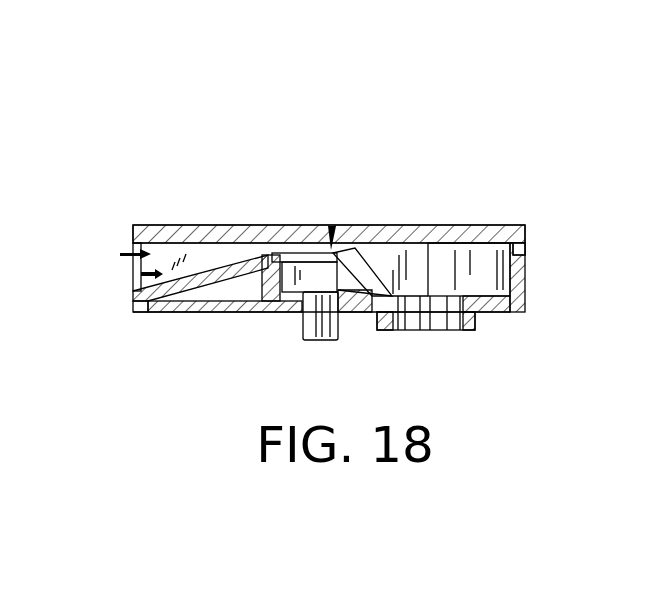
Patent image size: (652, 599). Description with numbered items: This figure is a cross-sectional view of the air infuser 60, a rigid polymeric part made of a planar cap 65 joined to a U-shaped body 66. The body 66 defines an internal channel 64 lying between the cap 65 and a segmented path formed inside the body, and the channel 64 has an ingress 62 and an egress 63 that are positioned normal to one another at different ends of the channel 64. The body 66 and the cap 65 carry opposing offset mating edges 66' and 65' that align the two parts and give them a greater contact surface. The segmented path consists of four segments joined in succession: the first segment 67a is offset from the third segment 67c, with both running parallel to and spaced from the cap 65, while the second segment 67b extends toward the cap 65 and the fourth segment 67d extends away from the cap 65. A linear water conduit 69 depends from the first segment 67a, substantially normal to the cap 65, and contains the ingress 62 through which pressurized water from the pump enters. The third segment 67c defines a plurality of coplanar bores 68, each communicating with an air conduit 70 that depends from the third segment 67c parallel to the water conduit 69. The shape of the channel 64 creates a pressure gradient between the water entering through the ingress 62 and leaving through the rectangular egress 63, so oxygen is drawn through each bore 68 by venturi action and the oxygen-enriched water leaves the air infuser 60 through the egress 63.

The air infuser 60 is at (152, 84).
The ingress 62 is at (449, 325).
The egress 63 is at (199, 313).
The internal channel 64 is at (122, 254).
The cap 65 is at (329, 187).
The offset mating edge of cap 65' is at (567, 269).
The U-shaped body 66 is at (534, 320).
The offset mating edge of body 66' is at (517, 238).
The first segment 67a is at (467, 242).
The second segment 67b is at (384, 243).
The third segment 67c is at (312, 252).
The fourth segment 67d is at (236, 270).
The bore 68 is at (333, 228).
The water conduit 69 is at (470, 318).
The air conduit 70 is at (303, 333).